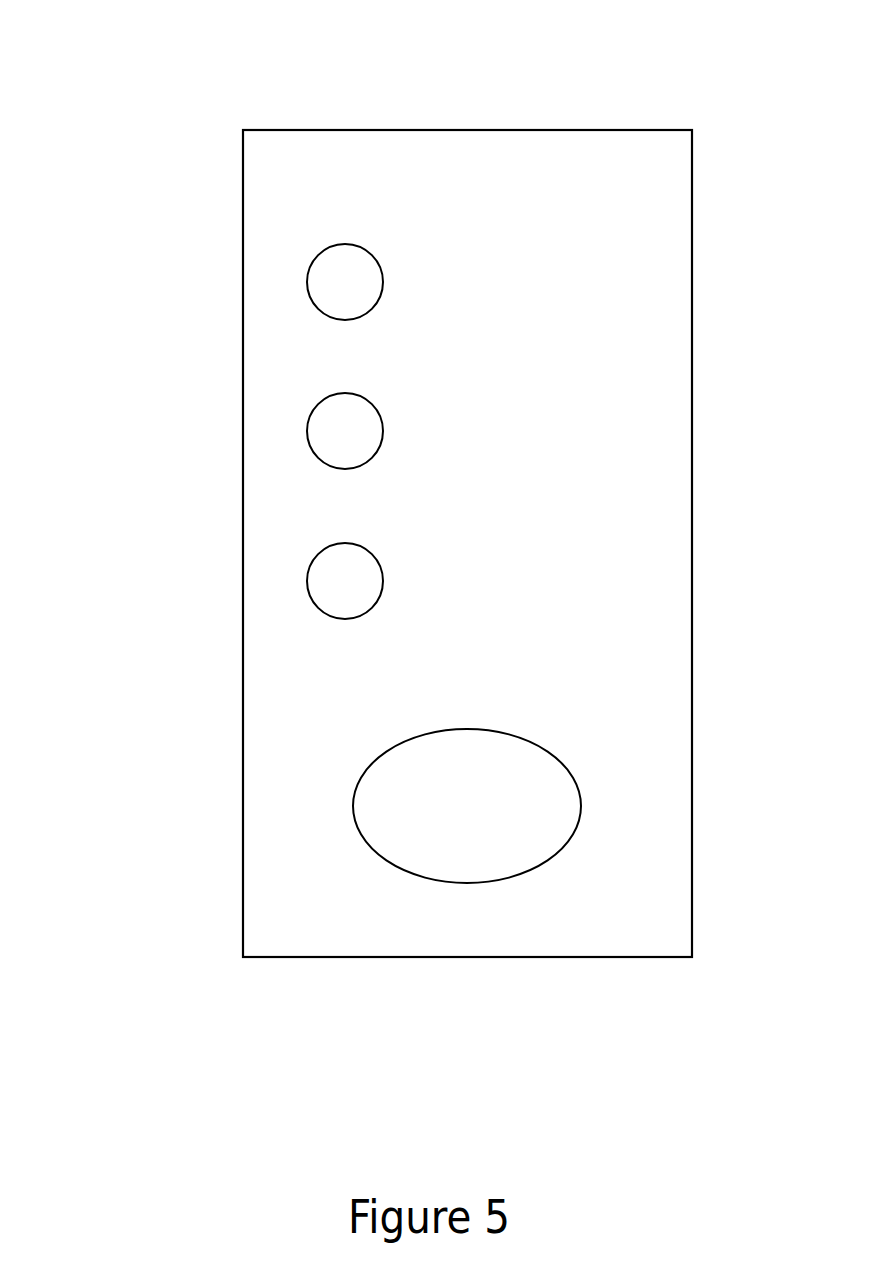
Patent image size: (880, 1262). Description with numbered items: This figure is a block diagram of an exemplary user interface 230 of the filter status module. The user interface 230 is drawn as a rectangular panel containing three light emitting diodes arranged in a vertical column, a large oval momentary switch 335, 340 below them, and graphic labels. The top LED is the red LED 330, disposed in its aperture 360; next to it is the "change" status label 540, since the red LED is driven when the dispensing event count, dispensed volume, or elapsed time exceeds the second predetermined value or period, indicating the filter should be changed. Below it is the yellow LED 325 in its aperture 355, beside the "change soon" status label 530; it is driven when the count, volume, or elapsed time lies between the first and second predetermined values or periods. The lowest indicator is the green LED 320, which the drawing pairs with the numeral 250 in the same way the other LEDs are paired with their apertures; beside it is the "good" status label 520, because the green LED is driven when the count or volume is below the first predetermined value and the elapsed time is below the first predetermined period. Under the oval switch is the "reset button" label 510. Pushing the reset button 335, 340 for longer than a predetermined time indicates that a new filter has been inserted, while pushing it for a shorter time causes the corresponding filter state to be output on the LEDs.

The user interface 230 is at (732, 49).
The red LED 330 is at (218, 256).
The aperture 360 is at (218, 256).
The yellow LED 325 is at (218, 406).
The aperture 355 is at (218, 406).
The green LED 320 is at (218, 560).
The good indicator 250 is at (218, 560).
The momentary switch 335 is at (317, 768).
The momentary switch 340 is at (317, 768).
The "change" status label 540 is at (608, 226).
The "change soon" status label 530 is at (608, 402).
The "good" status label 520 is at (608, 516).
The "reset button" label 510 is at (593, 853).